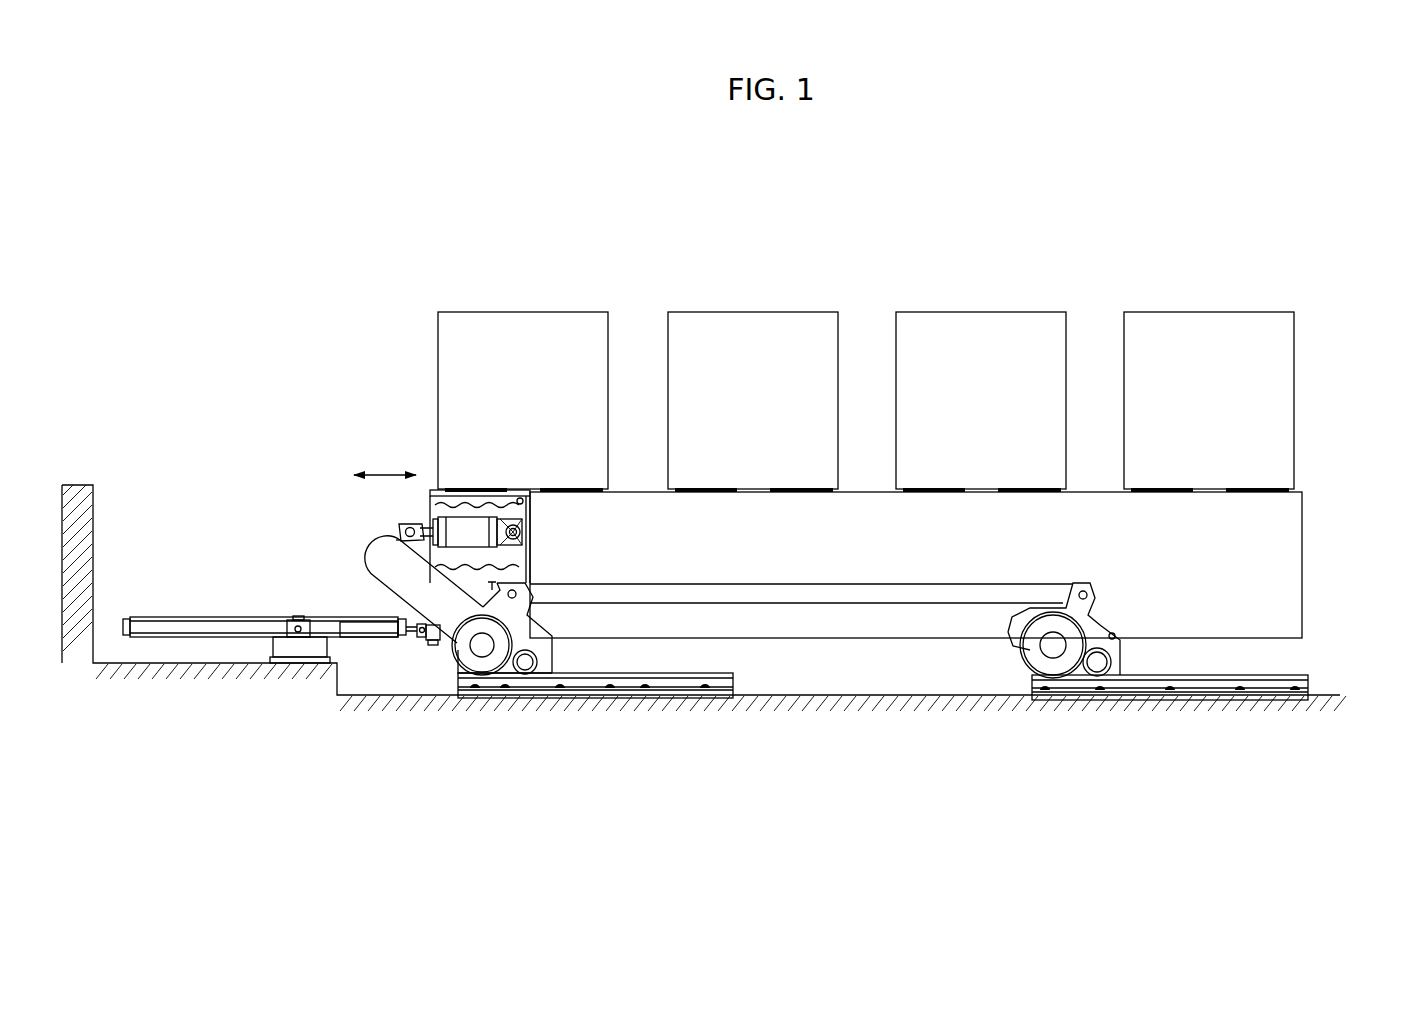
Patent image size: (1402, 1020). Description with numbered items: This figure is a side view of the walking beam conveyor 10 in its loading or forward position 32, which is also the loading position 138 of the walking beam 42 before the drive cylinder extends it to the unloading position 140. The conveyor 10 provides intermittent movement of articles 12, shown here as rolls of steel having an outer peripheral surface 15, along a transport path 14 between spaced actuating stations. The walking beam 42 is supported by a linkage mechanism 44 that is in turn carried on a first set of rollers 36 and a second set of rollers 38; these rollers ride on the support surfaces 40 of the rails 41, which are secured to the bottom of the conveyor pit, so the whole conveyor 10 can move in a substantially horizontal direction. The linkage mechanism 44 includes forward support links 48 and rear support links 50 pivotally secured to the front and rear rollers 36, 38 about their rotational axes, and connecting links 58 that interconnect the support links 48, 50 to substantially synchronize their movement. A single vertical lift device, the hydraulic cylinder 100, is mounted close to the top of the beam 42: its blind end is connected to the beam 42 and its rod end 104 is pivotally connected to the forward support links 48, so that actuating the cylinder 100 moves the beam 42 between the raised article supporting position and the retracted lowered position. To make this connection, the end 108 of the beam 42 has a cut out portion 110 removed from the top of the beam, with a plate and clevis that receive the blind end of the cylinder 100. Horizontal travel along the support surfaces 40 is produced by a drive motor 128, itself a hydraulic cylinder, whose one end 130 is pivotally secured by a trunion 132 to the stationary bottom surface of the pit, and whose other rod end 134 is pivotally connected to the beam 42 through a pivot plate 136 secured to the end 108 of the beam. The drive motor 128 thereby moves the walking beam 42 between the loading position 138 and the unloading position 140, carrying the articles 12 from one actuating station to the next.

The walking beam conveyor 10 is at (257, 464).
The articles 12 is at (515, 312).
The transport path 14 is at (390, 475).
The outer peripheral surface 15 is at (560, 330).
The loading or forward position 32 is at (352, 532).
The first set of rollers 36 is at (518, 628).
The second set of rollers 38 is at (1027, 667).
The support surfaces 40 is at (1193, 673).
The rails 41 is at (1310, 683).
The walking beam 42 is at (1302, 527).
The linkage mechanism 44 is at (350, 556).
The forward support links 48 is at (313, 657).
The rear support links 50 is at (1093, 628).
The connecting links 58 is at (813, 603).
The hydraulic cylinder 100 is at (460, 515).
The rod end 104 is at (403, 527).
The end of the beam 108 is at (531, 505).
The cut out portion 110 is at (492, 515).
The drive motor 128 is at (187, 617).
The one end of the drive motor 130 is at (152, 637).
The trunion 132 is at (287, 627).
The rod end of the drive motor 134 is at (418, 639).
The pivot plate 136 is at (430, 645).
The loading position 138 is at (421, 662).
The unloading position 140 is at (408, 622).